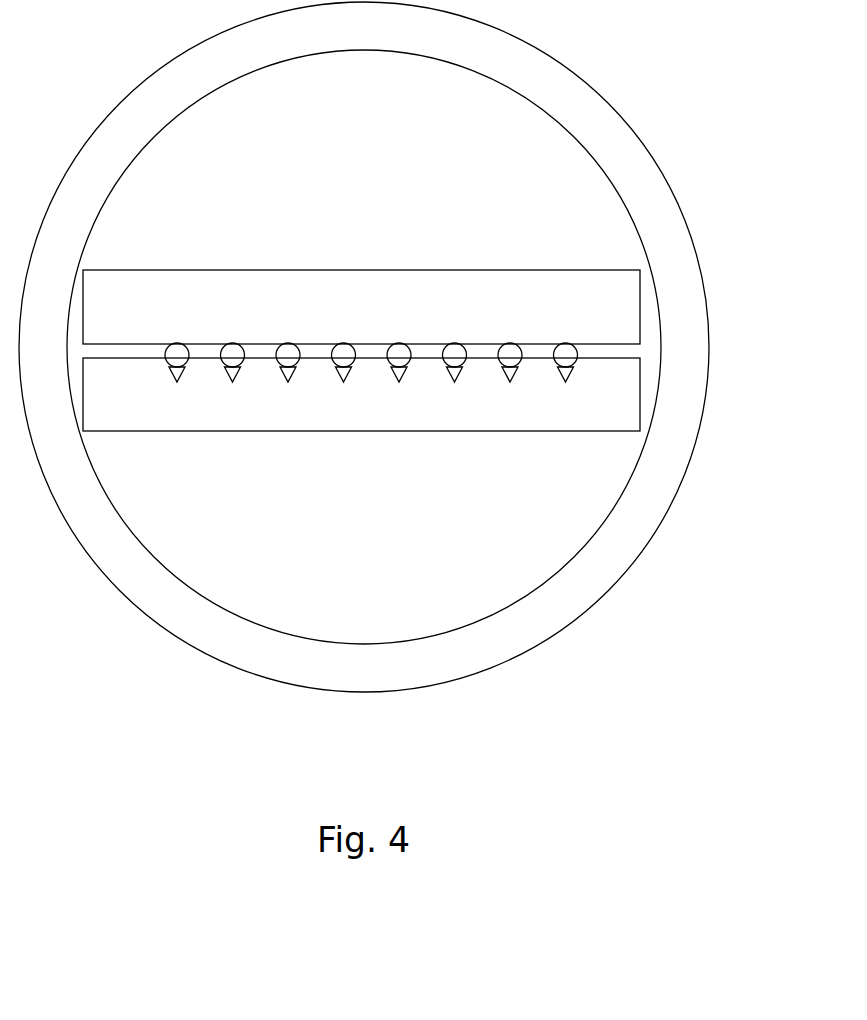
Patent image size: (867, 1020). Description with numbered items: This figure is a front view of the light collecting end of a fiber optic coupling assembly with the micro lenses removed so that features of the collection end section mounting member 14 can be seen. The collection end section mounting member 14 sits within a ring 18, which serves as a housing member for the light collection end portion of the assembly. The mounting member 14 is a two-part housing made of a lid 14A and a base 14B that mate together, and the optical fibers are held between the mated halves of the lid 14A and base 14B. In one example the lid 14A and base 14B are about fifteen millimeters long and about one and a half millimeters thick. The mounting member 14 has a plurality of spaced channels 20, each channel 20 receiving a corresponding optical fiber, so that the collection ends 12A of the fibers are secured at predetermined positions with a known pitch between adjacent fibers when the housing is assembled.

The collection end section mounting member 14 is at (693, 135).
The ring 18 is at (90, 137).
The lid 14A is at (265, 270).
The base 14B is at (300, 432).
The collection ends 12A is at (345, 352).
The channels 20 is at (565, 372).